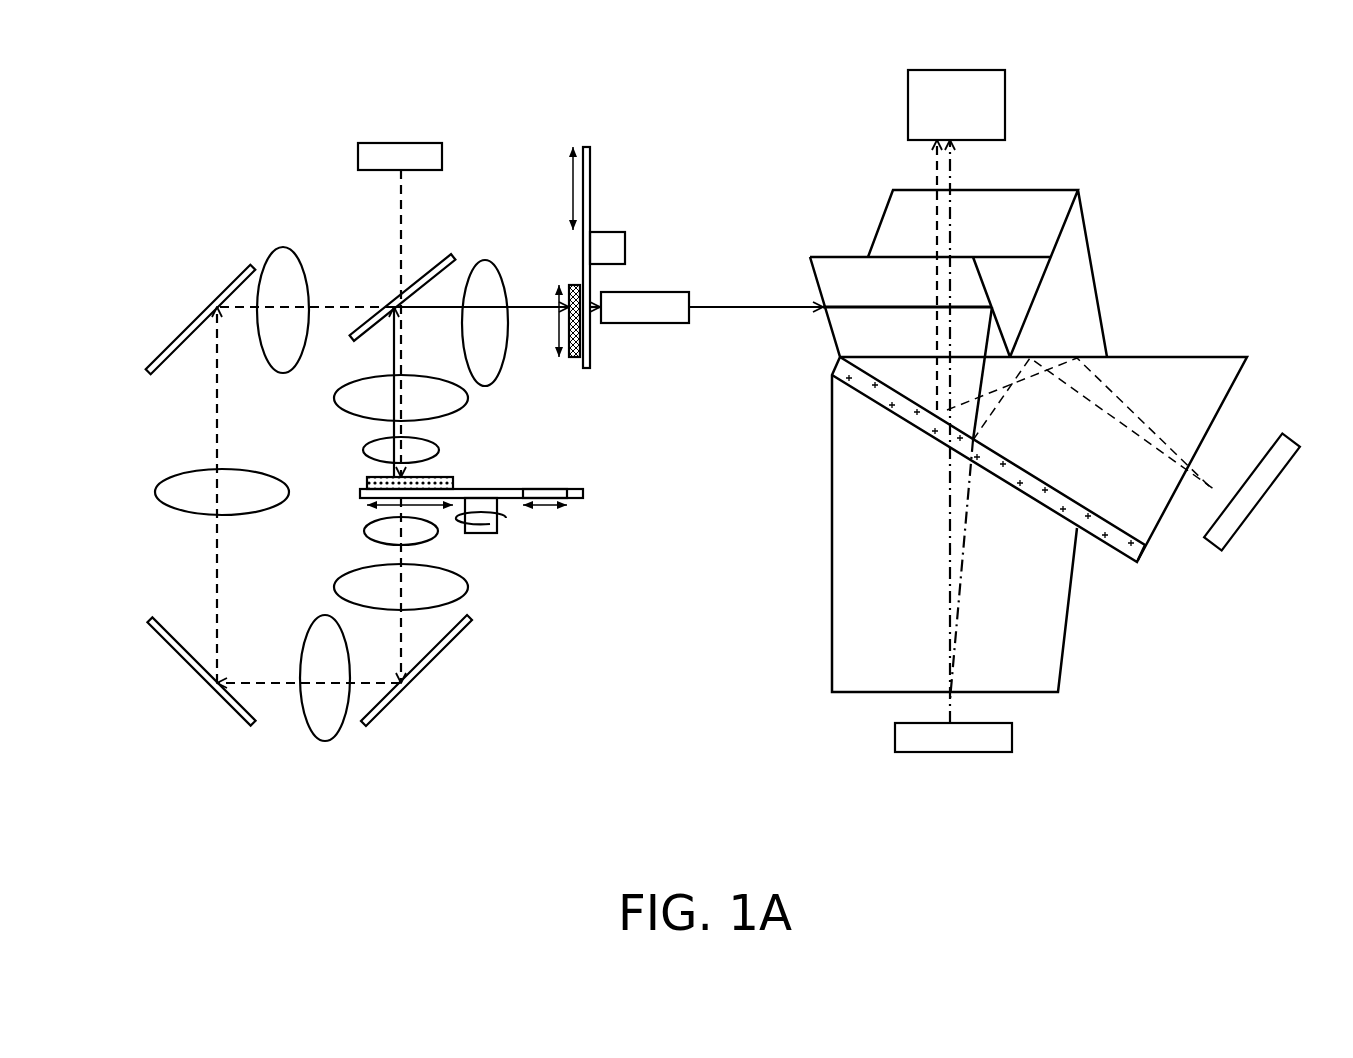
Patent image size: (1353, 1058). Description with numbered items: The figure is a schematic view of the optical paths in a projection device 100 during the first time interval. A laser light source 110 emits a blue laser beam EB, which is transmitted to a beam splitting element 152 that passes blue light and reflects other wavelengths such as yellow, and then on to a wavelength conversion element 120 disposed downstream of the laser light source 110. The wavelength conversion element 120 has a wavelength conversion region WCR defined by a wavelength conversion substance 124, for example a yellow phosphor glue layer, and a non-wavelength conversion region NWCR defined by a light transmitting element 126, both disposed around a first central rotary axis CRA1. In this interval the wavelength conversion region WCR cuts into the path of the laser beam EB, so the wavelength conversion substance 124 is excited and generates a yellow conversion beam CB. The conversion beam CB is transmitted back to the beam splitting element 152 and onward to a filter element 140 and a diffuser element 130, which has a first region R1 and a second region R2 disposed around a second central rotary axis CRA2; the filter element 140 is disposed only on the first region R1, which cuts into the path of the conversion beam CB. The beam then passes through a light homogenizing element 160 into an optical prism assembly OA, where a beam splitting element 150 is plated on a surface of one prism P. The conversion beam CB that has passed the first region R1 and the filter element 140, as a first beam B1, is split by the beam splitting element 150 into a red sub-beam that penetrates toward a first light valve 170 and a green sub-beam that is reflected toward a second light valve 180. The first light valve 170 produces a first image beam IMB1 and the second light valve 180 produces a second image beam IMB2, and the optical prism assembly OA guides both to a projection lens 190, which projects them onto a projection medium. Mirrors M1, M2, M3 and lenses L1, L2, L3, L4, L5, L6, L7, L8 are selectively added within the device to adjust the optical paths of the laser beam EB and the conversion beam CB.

The projection device 100 is at (1298, 822).
The laser light source 110 is at (377, 153).
The wavelength conversion element 120 is at (587, 510).
The wavelength conversion substance 124 is at (438, 480).
The light transmitting element 126 is at (543, 490).
The diffuser element 130 is at (588, 132).
The filter element 140 is at (575, 358).
The beam splitting element 150 is at (1140, 563).
The beam splitting element 152 is at (452, 260).
The light homogenizing element 160 is at (643, 315).
The first light valve 170 is at (1000, 737).
The second light valve 180 is at (1240, 518).
The projection lens 190 is at (997, 105).
The laser beam EB is at (400, 203).
The conversion beam CB is at (393, 350).
The first beam B1 is at (737, 307).
The lens L1 is at (347, 397).
The lens L2 is at (373, 450).
The lens L3 is at (372, 533).
The lens L4 is at (347, 587).
The lens L5 is at (313, 723).
The lens L6 is at (188, 483).
The lens L7 is at (285, 262).
The lens L8 is at (492, 278).
The mirror M1 is at (447, 642).
The mirror M2 is at (178, 647).
The mirror M3 is at (187, 335).
The first region R1 is at (545, 321).
The second region R2 is at (555, 188).
The first central rotary axis CRA1 is at (488, 530).
The second central rotary axis CRA2 is at (607, 240).
The wavelength conversion region WCR is at (387, 510).
The non-wavelength conversion region NWCR is at (547, 508).
The first image beam IMB1 is at (955, 175).
The second image beam IMB2 is at (935, 175).
The optical prism assembly OA is at (1188, 248).
The prism P is at (845, 548).